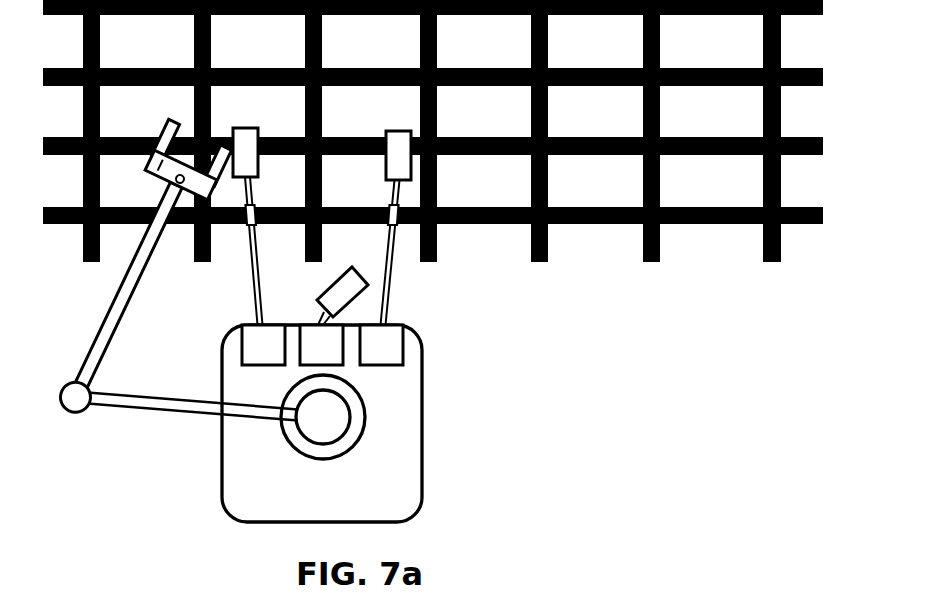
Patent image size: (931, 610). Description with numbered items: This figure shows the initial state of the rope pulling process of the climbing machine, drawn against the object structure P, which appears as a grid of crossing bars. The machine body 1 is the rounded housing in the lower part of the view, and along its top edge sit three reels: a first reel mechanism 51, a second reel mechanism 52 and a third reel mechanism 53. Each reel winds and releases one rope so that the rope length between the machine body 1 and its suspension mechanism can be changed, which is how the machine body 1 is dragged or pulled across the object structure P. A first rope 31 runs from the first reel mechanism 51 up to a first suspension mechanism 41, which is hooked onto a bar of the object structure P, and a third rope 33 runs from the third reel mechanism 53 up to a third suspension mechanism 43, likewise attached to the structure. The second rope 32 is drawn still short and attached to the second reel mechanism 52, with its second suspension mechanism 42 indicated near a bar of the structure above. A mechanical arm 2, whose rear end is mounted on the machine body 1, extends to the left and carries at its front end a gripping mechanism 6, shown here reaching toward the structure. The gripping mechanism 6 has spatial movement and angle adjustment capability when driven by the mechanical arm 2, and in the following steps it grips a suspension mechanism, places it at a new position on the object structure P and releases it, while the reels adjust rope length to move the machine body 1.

The machine body 1 is at (402, 483).
The mechanical arm 2 is at (158, 407).
The gripping mechanism 6 is at (148, 180).
The first rope 31 is at (258, 305).
The second rope 32 is at (343, 288).
The third rope 33 is at (387, 317).
The first suspension mechanism 41 is at (247, 138).
The second suspension mechanism 42 is at (343, 140).
The third suspension mechanism 43 is at (403, 162).
The first reel mechanism 51 is at (251, 351).
The second reel mechanism 52 is at (337, 357).
The third reel mechanism 53 is at (390, 345).
The object structure P is at (433, 156).